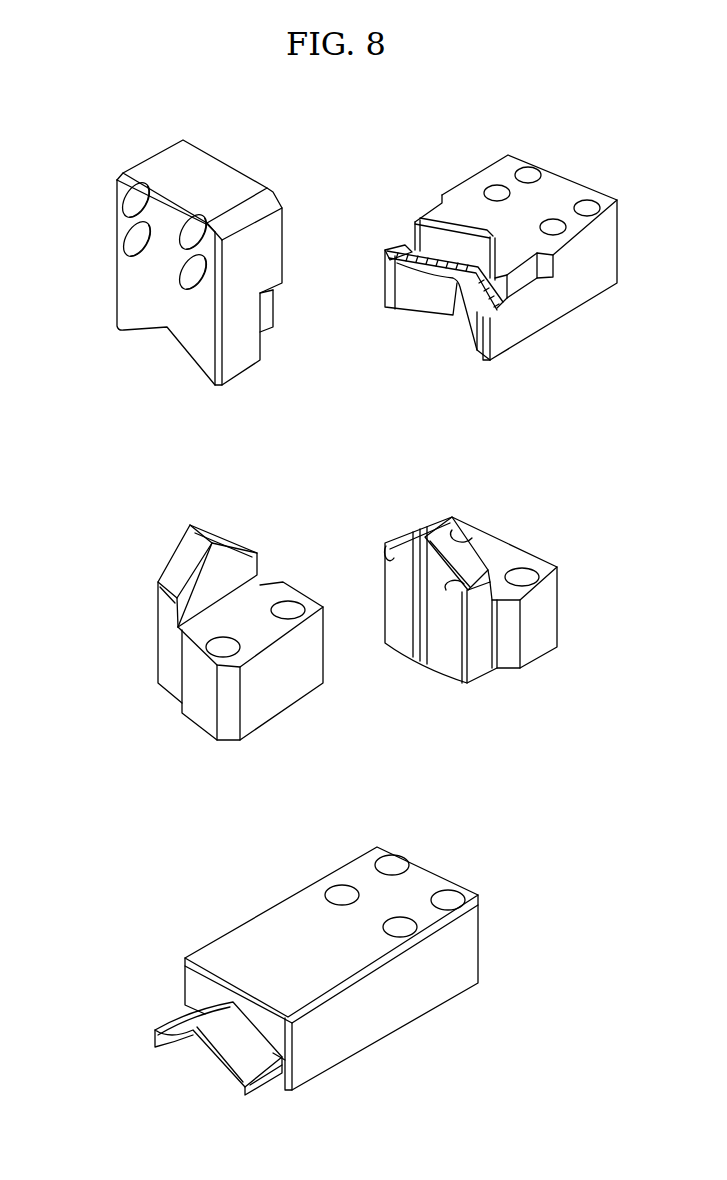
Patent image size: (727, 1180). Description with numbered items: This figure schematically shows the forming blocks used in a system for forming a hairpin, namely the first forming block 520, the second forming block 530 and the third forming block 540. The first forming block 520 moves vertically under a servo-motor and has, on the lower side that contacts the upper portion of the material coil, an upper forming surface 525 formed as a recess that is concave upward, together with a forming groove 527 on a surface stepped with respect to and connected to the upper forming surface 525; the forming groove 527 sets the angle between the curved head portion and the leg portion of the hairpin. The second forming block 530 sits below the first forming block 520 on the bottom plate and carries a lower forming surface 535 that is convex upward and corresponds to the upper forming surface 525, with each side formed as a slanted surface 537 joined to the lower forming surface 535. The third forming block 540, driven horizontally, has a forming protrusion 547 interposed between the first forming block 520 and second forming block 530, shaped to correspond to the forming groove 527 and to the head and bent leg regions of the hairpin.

The first forming block 520 is at (110, 166).
The upper forming surface 525 is at (438, 242).
The forming groove 527 is at (396, 247).
The second forming block 530 is at (142, 538).
The lower forming surface 535 is at (190, 547).
The slanted surface 537 is at (165, 650).
The third forming block 540 is at (158, 924).
The forming protrusion 547 is at (238, 1048).